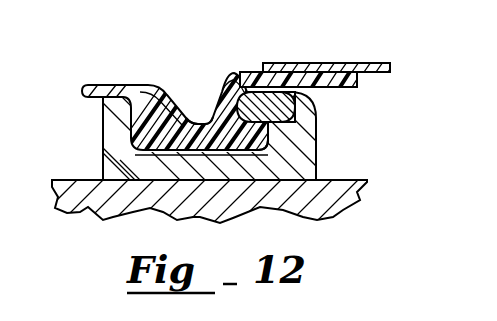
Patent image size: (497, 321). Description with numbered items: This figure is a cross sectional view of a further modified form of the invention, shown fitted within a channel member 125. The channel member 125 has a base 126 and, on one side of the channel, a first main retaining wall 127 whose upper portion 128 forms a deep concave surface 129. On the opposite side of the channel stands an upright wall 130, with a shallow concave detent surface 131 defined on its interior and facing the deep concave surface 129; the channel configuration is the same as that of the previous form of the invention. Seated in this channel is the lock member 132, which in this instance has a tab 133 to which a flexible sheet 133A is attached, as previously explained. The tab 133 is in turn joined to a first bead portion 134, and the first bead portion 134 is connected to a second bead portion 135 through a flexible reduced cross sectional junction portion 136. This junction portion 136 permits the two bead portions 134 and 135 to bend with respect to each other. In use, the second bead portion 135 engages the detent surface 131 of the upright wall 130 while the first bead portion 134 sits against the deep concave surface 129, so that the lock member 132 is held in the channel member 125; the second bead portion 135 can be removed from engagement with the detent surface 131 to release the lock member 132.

The channel member 125 is at (312, 168).
The base 126 is at (244, 168).
The first main retaining wall 127 is at (320, 144).
The upper portion 128 is at (247, 100).
The deep concave surface 129 is at (276, 125).
The upright wall 130 is at (110, 143).
The shallow concave detent surface 131 is at (110, 163).
The lock member 132 is at (182, 137).
The tab 133 is at (309, 72).
The flexible sheet 133A is at (369, 63).
The first bead portion 134 is at (288, 136).
The second bead portion 135 is at (181, 112).
The flexible reduced cross sectional junction portion 136 is at (107, 83).